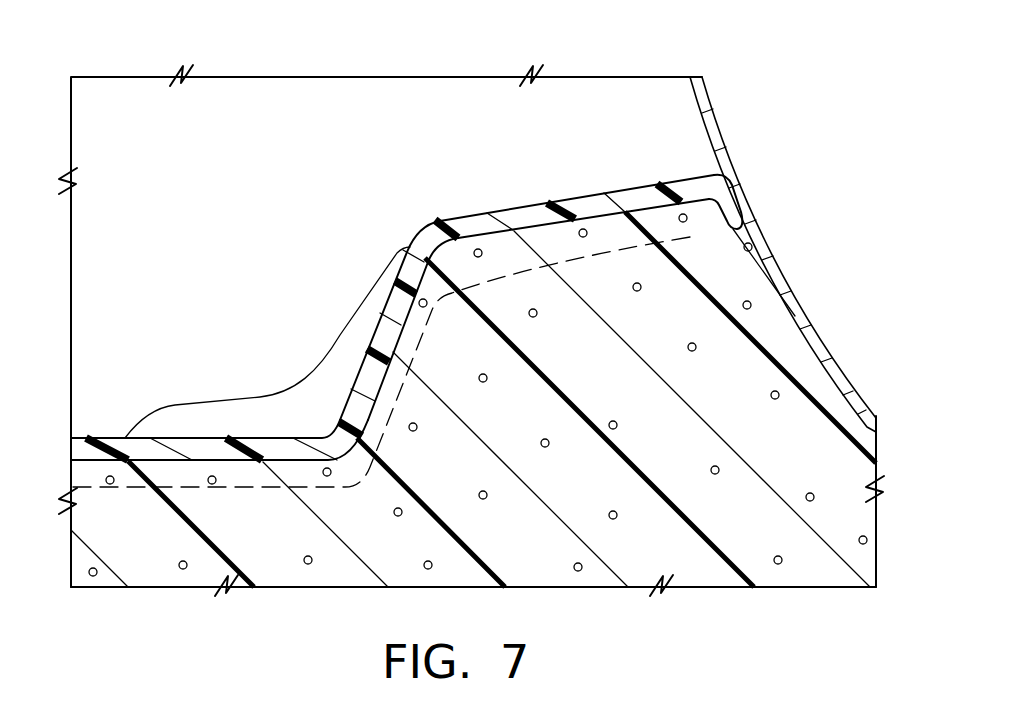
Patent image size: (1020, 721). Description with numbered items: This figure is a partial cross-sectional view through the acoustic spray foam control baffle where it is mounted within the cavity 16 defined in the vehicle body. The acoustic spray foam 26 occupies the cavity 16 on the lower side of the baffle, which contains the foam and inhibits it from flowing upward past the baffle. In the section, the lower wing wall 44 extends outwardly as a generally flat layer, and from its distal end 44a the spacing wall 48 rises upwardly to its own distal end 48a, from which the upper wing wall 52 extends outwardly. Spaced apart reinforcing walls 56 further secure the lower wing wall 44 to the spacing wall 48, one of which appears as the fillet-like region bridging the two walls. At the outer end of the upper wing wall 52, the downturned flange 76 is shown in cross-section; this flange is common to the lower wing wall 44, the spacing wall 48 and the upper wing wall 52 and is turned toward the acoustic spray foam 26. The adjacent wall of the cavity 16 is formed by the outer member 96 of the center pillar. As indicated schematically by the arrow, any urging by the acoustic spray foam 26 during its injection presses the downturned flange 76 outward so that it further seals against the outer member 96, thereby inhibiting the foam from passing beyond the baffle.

The cavity 16 is at (363, 193).
The acoustic spray foam 26 is at (797, 550).
The lower wing wall 44 is at (200, 437).
The distal end of lower wing wall 44a is at (322, 435).
The spacing wall 48 is at (390, 310).
The distal end of spacing wall 48a is at (398, 252).
The upper wing wall 52 is at (576, 197).
The reinforcing walls 56 is at (265, 410).
The downturned flange 76 is at (673, 252).
The outer member 96 is at (718, 122).